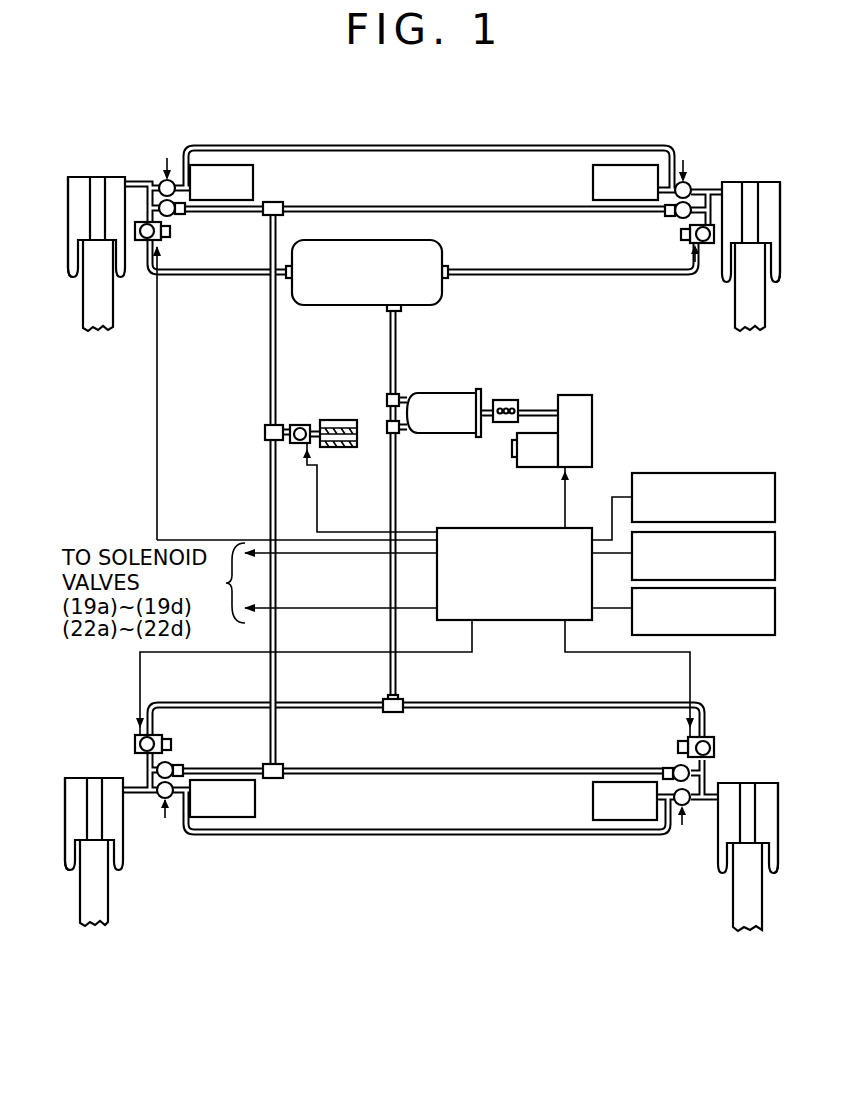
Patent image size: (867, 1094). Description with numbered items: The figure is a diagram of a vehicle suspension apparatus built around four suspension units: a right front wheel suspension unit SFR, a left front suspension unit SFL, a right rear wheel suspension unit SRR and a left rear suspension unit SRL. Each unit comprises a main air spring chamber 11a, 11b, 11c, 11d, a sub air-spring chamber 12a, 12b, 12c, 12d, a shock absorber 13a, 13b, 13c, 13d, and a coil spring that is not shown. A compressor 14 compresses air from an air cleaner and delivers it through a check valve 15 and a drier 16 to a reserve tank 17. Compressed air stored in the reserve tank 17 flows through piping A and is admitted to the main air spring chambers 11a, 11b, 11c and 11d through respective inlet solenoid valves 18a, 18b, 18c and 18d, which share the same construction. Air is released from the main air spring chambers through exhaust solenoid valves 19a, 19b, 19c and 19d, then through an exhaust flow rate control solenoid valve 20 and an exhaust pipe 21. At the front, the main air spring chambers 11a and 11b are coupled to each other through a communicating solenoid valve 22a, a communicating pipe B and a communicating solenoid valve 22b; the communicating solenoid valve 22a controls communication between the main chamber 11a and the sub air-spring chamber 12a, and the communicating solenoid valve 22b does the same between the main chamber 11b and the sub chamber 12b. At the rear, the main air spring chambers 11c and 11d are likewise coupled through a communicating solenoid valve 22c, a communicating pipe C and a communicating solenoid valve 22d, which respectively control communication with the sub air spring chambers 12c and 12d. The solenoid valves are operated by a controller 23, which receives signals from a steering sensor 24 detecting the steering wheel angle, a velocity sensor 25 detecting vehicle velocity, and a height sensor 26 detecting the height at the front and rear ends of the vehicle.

The main air spring chamber 11a is at (778, 285).
The main air spring chamber 11b is at (72, 280).
The main air spring chamber 11c is at (776, 876).
The main air spring chamber 11d is at (70, 873).
The sub air-spring chamber 12a is at (593, 182).
The sub air-spring chamber 12b is at (253, 180).
The sub air-spring chamber 12c is at (593, 800).
The sub air-spring chamber 12d is at (255, 800).
The shock absorber 13a is at (738, 320).
The shock absorber 13b is at (113, 322).
The shock absorber 13c is at (740, 912).
The shock absorber 13d is at (108, 905).
The compressor 14 is at (592, 408).
The check valve 15 is at (505, 400).
The drier 16 is at (438, 393).
The reserve tank 17 is at (440, 250).
The inlet solenoid valve 18a is at (681, 238).
The inlet solenoid valve 18b is at (170, 235).
The inlet solenoid valve 18c is at (713, 738).
The inlet solenoid valve 18d is at (135, 736).
The exhaust solenoid valve 19a is at (665, 212).
The exhaust solenoid valve 19b is at (185, 212).
The exhaust solenoid valve 19c is at (668, 770).
The exhaust solenoid valve 19d is at (173, 768).
The exhaust flow rate control solenoid valve 20 is at (298, 425).
The exhaust pipe 21 is at (340, 420).
The communicating solenoid valve 22a is at (690, 182).
The communicating solenoid valve 22b is at (162, 182).
The communicating solenoid valve 22c is at (678, 806).
The communicating solenoid valve 22d is at (162, 800).
The controller 23 is at (514, 528).
The steering sensor 24 is at (632, 568).
The velocity sensor 25 is at (734, 635).
The height sensor 26 is at (707, 473).
The piping A is at (216, 277).
The communicating pipe B is at (450, 148).
The communicating pipe C is at (412, 836).
The left front suspension unit SFL is at (118, 177).
The right front wheel suspension unit SFR is at (750, 182).
The left rear suspension unit SRL is at (94, 778).
The right rear wheel suspension unit SRR is at (750, 783).